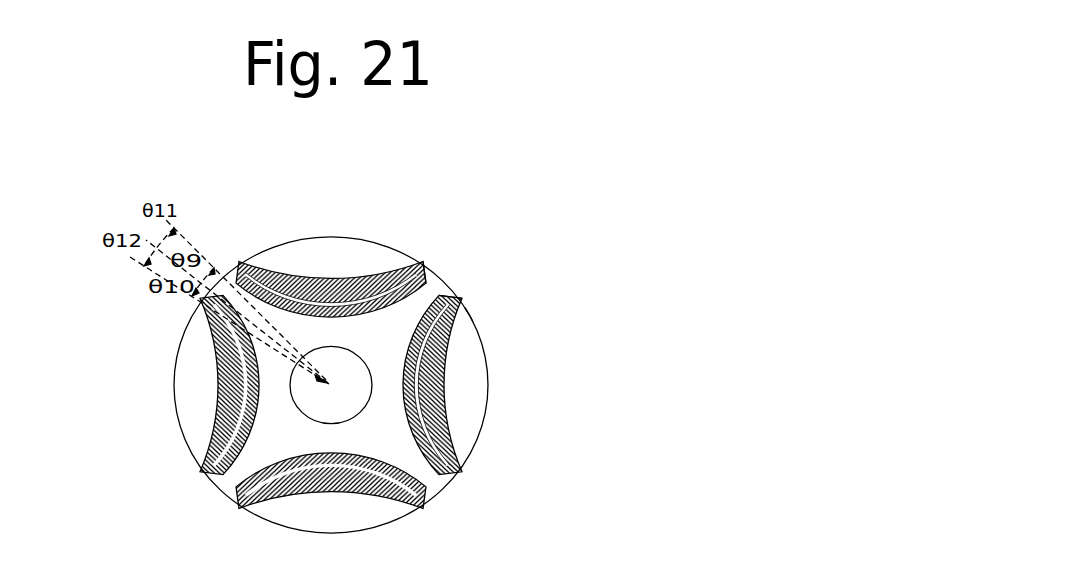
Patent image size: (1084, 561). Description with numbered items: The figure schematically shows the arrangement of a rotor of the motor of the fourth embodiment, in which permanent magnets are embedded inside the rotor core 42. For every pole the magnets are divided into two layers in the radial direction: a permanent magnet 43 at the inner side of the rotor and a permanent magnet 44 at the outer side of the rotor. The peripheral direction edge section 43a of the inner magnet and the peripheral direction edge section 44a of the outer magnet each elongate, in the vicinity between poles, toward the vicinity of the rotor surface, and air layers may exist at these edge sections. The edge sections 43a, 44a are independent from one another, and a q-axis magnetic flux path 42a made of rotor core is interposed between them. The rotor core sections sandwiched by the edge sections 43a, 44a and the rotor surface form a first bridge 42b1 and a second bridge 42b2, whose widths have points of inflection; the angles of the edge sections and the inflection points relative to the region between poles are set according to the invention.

The rotor core 42 is at (385, 398).
The q-axis magnetic flux path 42a is at (428, 267).
The first bridge 42b1 is at (452, 287).
The second bridge 42b2 is at (465, 306).
The permanent magnet at inner side of the rotor 43 is at (427, 480).
The peripheral direction edge section of the inner permanent magnet 43a is at (430, 268).
The permanent magnet at outer side of the rotor 44 is at (335, 285).
The peripheral direction edge section of the outer permanent magnet 44a is at (408, 262).